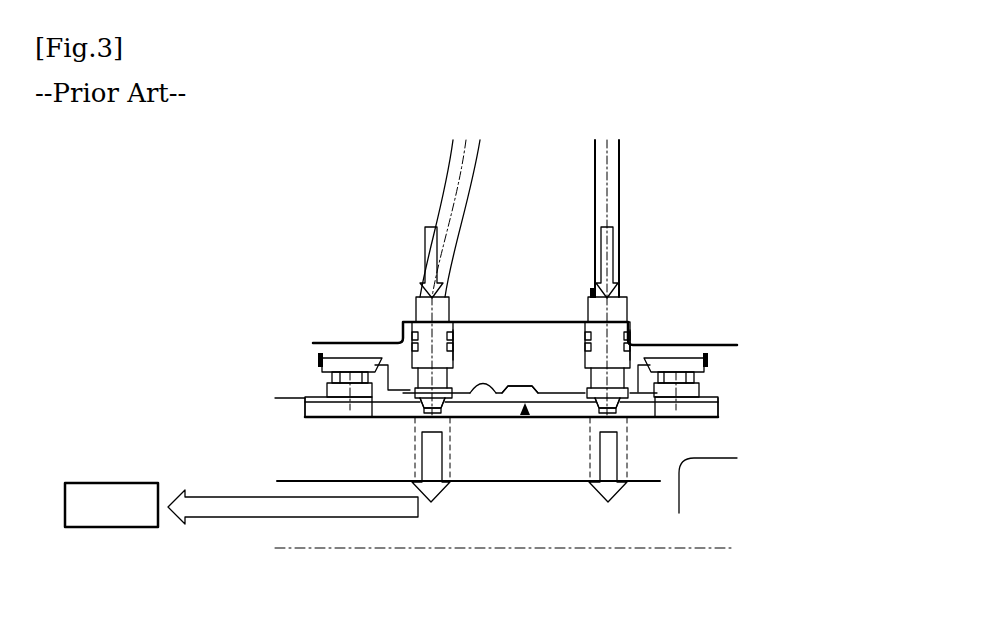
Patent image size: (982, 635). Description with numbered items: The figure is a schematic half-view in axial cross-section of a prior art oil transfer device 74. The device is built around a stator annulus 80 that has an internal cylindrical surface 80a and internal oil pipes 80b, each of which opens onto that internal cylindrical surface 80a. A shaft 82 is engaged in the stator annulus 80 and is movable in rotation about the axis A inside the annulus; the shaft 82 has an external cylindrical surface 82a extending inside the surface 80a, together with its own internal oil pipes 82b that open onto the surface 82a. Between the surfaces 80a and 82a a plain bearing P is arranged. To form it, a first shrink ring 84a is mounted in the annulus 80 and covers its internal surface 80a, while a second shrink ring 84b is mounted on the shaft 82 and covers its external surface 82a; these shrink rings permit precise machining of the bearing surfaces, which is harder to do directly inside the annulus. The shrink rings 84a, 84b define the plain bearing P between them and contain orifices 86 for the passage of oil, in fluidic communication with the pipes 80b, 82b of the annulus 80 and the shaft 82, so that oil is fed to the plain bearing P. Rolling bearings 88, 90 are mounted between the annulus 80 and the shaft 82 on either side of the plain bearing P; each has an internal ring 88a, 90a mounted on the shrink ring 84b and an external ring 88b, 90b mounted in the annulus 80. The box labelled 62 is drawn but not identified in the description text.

The oil transfer device 74 is at (751, 211).
The stator annulus 80 is at (648, 348).
The internal cylindrical surface 80a is at (552, 398).
The internal oil pipes 80b is at (455, 358).
The shaft 82 is at (718, 452).
The external cylindrical surface 82a is at (496, 394).
The internal oil pipes 82b is at (450, 470).
The first shrink ring 84a is at (640, 392).
The second shrink ring 84b is at (625, 412).
The orifices 86 is at (420, 405).
The rolling bearing 88 is at (293, 375).
The internal ring 88a is at (323, 398).
The external ring 88b is at (330, 362).
The rolling bearing 90 is at (740, 373).
The internal ring 90a is at (705, 400).
The external ring 90b is at (712, 360).
The controller 62 is at (105, 483).
The plain bearing P is at (528, 417).
The axis A is at (717, 549).